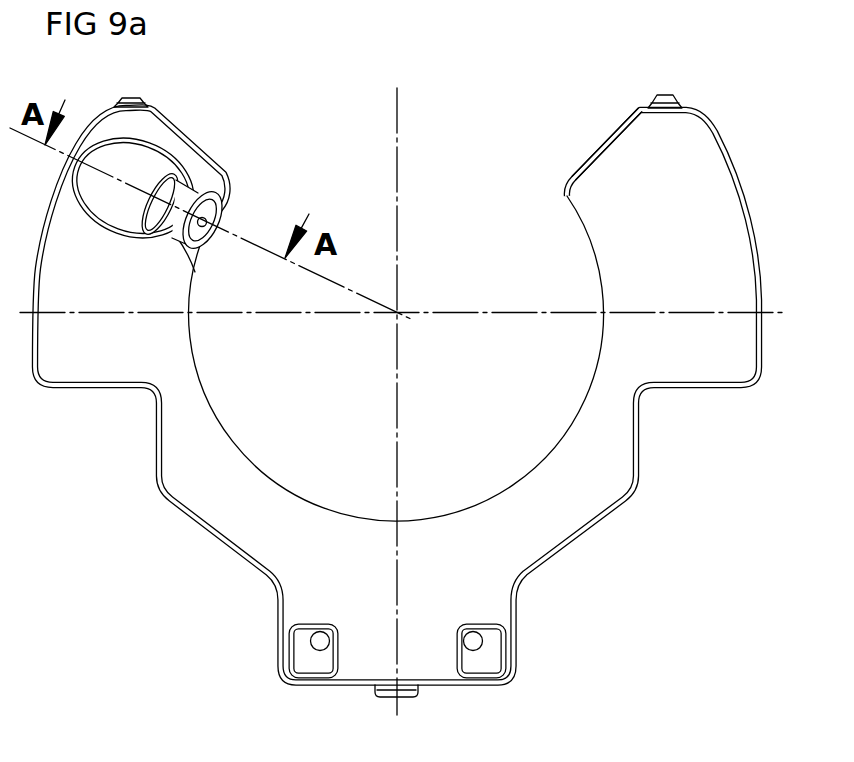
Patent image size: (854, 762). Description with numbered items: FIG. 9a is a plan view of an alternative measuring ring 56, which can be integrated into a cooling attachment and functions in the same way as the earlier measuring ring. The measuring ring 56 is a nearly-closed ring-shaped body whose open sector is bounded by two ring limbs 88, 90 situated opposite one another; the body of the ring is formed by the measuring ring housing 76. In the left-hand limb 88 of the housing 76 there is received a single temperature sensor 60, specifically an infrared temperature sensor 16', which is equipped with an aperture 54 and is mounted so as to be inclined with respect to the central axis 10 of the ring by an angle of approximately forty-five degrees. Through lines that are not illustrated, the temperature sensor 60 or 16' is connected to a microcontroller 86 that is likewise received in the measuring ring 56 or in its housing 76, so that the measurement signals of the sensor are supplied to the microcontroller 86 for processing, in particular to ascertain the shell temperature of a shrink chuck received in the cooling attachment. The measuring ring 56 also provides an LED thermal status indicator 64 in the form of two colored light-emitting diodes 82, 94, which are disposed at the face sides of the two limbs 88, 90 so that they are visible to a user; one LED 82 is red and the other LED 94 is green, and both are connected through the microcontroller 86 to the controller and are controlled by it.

The central axis 10 is at (399, 311).
The infrared temperature sensor 16' is at (390, 358).
The aperture 54 is at (216, 213).
The measuring ring 56 is at (400, 375).
The temperature sensor 60 is at (390, 358).
The LED status indicator 64 is at (398, 78).
The measuring ring housing 76 is at (723, 140).
The red LED 82 is at (197, 134).
The microcontroller 86 is at (672, 268).
The left-hand ring limb 88 is at (166, 172).
The ring limb 90 is at (591, 137).
The green LED 94 is at (664, 95).